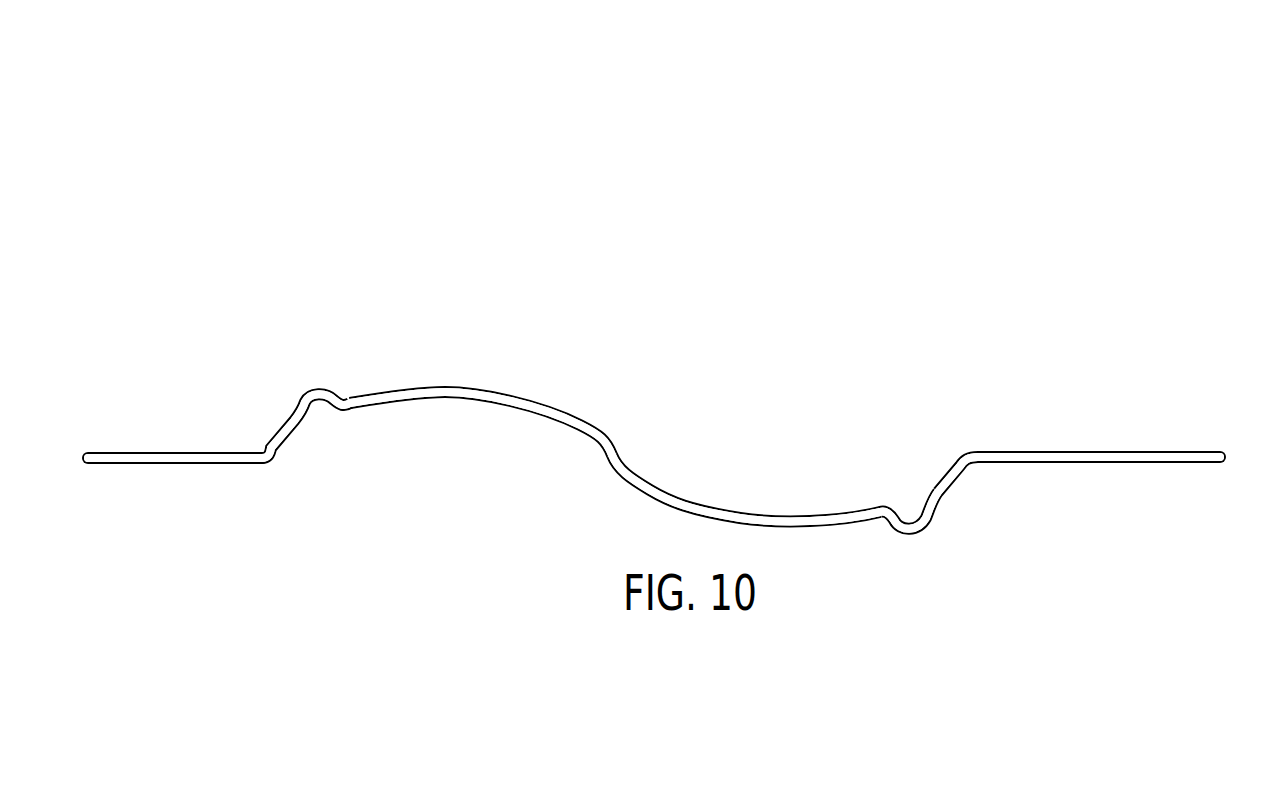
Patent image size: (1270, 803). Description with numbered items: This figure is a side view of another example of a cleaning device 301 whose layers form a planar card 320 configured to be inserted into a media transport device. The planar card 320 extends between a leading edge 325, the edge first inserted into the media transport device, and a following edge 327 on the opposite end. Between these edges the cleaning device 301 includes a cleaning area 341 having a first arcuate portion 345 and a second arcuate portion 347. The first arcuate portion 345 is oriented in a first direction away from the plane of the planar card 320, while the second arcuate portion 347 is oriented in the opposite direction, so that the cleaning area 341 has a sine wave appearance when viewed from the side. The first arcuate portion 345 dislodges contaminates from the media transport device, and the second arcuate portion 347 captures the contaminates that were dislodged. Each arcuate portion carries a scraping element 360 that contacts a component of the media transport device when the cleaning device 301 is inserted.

The cleaning device 301 is at (862, 116).
The cleaning area 341 is at (703, 252).
The leading edge 325 is at (90, 450).
The planar card 320 is at (1057, 455).
The following edge 327 is at (1222, 452).
The first arcuate portion 345 is at (477, 388).
The second arcuate portion 347 is at (735, 515).
The scraping element 360 is at (313, 388).